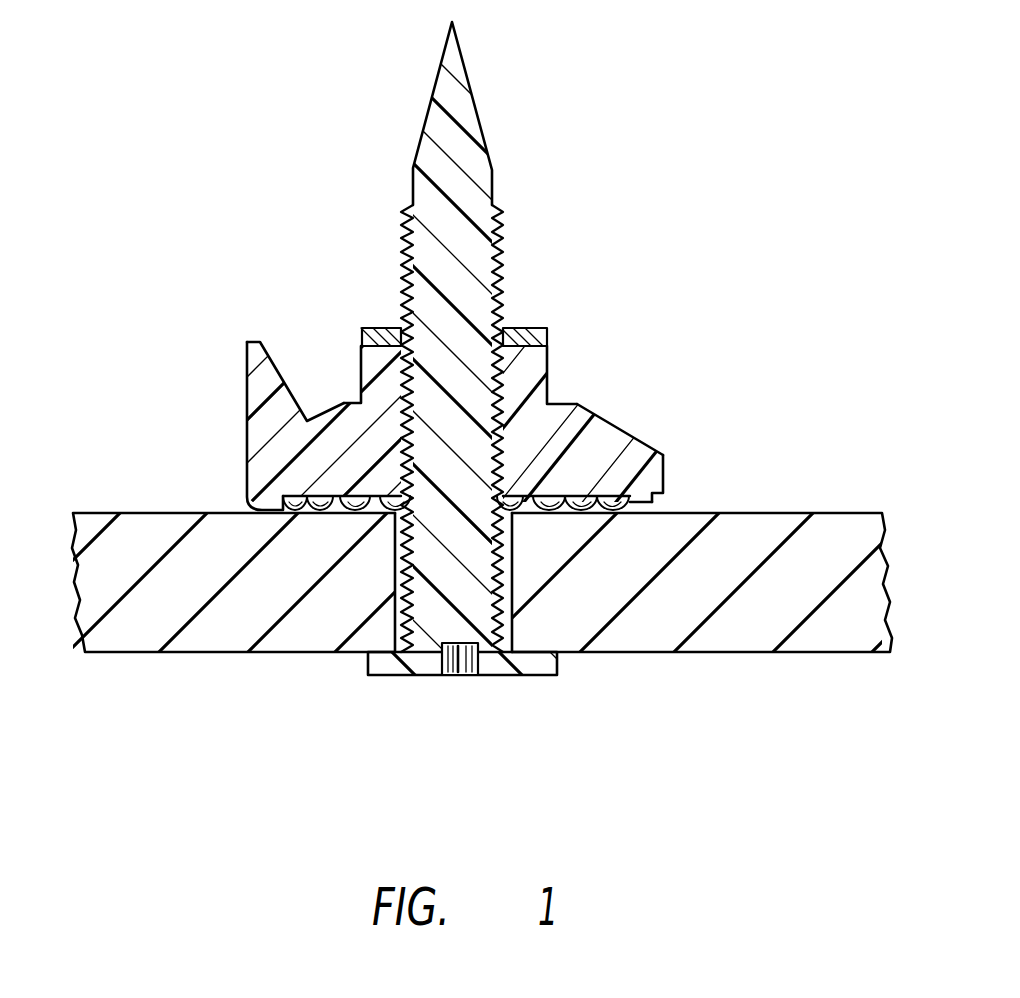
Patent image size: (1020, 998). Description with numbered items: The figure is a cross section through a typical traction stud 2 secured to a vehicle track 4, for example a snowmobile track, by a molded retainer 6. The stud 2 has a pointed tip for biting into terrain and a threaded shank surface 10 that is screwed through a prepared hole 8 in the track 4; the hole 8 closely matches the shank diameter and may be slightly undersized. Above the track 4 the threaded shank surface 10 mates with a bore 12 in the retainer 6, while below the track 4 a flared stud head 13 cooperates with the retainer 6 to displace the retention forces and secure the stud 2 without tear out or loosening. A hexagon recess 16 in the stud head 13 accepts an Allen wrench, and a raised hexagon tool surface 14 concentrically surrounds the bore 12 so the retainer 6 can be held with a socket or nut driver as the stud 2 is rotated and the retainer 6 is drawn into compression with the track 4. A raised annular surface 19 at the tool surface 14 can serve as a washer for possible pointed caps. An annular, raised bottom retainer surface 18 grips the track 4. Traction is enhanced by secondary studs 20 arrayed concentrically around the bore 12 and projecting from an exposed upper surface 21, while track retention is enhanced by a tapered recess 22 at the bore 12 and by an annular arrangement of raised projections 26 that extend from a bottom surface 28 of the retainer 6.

The traction stud 2 is at (477, 480).
The vehicle track 4 is at (510, 560).
The molded retainer 6 is at (432, 355).
The hole 8 is at (513, 593).
The threaded shank surface 10 is at (408, 209).
The bore 12 is at (515, 330).
The flared stud head 13 is at (368, 677).
The hexagon tool surface 14 is at (360, 351).
The hexagon recess 16 is at (455, 677).
The raised bottom retainer surface 18 is at (226, 502).
The raised annular surface 19 is at (384, 330).
The secondary studs 20 is at (247, 361).
The exposed upper surface 21 is at (578, 404).
The tapered recess 22 is at (578, 405).
The raised projections 26 is at (657, 502).
The bottom surface 28 is at (628, 492).